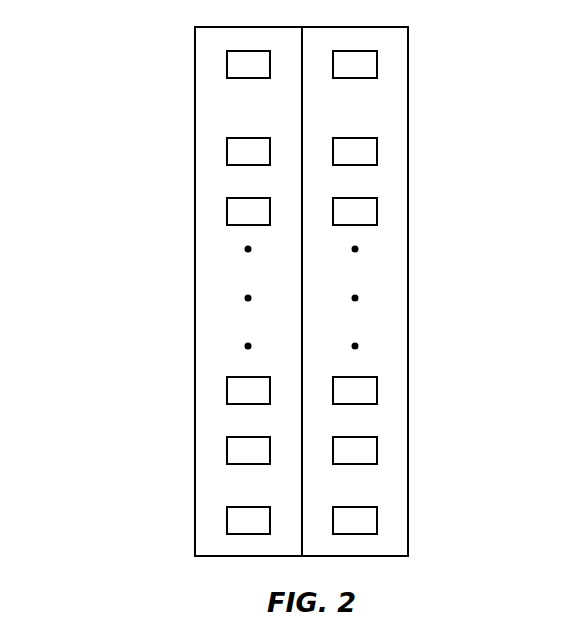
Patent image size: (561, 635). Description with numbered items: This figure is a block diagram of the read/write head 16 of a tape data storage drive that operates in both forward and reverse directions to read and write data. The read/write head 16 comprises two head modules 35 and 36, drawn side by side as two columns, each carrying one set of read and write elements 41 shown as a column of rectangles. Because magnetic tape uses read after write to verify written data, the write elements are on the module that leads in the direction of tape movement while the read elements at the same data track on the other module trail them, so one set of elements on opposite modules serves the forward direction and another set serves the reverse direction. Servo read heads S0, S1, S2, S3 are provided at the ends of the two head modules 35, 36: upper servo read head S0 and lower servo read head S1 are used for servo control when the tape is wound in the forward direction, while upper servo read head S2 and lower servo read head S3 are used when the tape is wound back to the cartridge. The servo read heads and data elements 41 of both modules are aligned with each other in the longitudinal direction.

The read/write head 16 is at (132, 58).
The head module 35 is at (195, 442).
The head module 36 is at (408, 328).
The read and write elements 41 is at (227, 212).
The upper servo read head S0 is at (227, 62).
The lower servo read head S1 is at (227, 518).
The upper servo read head S2 is at (377, 62).
The lower servo read head S3 is at (377, 520).